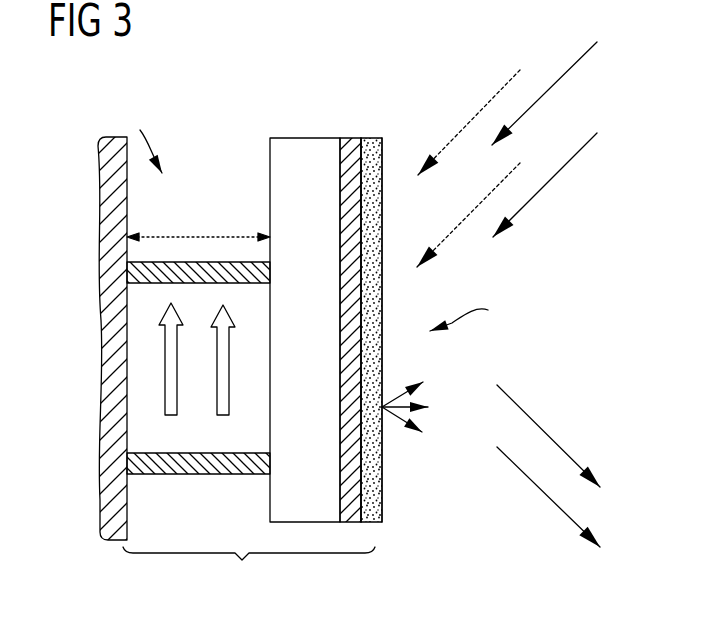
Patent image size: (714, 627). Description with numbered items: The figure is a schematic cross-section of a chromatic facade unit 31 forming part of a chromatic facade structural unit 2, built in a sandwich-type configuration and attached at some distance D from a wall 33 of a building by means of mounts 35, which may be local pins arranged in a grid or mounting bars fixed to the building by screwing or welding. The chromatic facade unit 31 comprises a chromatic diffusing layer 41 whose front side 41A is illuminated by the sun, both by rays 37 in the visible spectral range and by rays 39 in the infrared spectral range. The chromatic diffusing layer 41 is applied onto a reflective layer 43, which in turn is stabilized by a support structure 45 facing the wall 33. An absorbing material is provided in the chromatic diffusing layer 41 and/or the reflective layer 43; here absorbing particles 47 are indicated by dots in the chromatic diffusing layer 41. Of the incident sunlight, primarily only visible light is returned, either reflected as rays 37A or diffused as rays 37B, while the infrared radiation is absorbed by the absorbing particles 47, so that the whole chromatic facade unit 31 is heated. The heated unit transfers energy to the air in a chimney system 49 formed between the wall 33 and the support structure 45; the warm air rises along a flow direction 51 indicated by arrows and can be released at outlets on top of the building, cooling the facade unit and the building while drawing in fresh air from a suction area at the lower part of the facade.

The chromatic facade structural unit 2 is at (249, 572).
The chromatic facade unit 31 is at (471, 314).
The wall 33 is at (97, 455).
The mounts 35 is at (138, 283).
The rays in the visible spectral range 37 is at (545, 185).
The reflected rays 37A is at (535, 423).
The diffused rays 37B is at (398, 418).
The rays in the infrared spectral range 39 is at (485, 105).
The chromatic diffusing layer 41 is at (376, 140).
The front side 41A is at (383, 160).
The reflective layer 43 is at (352, 148).
The support structure 45 is at (293, 150).
The absorbing particles 47 is at (383, 293).
The chimney system 49 is at (143, 137).
The flow direction 51 is at (217, 378).
The distance D is at (198, 234).